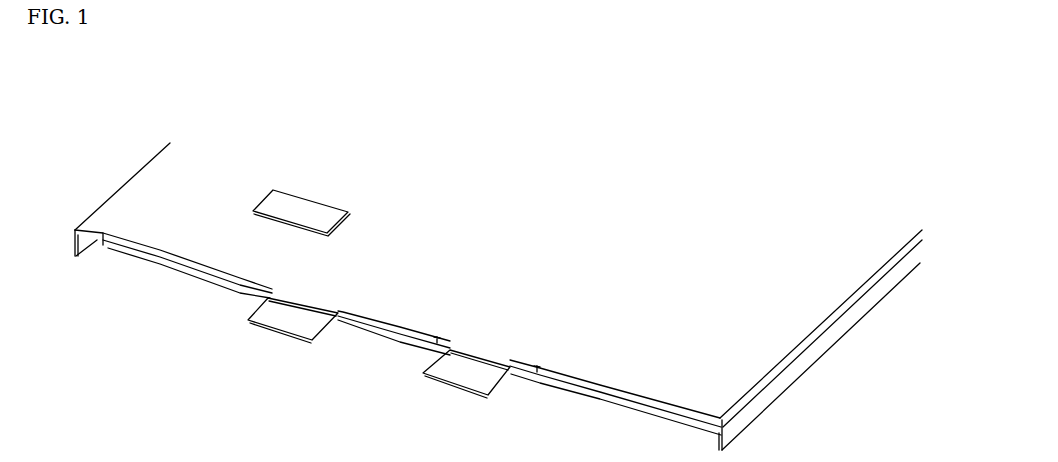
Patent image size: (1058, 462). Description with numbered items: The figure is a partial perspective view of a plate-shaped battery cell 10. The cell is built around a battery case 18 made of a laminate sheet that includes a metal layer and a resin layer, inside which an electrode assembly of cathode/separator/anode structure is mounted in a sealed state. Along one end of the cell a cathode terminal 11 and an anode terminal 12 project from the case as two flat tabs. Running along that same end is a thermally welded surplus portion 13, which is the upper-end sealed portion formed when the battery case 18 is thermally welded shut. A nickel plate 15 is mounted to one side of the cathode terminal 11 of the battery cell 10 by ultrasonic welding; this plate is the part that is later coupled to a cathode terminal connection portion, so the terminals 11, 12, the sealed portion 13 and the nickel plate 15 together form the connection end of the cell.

The battery cell 10 is at (62, 98).
The cathode terminal 11 is at (298, 319).
The anode terminal 12 is at (467, 370).
The thermally welded surplus portion 13 is at (617, 388).
The nickel plate 15 is at (293, 210).
The battery case 18 is at (595, 212).